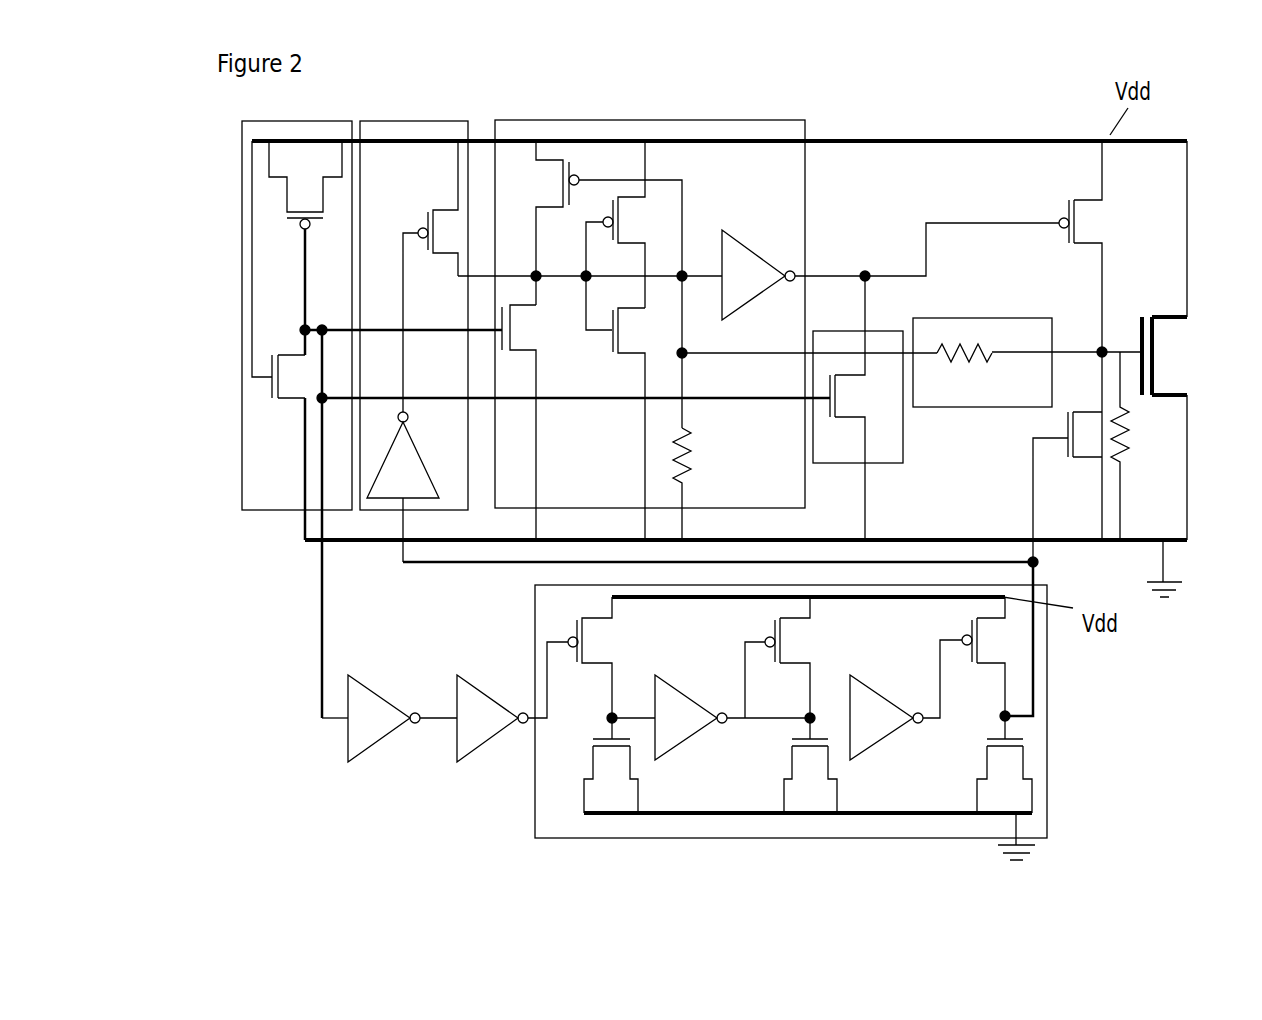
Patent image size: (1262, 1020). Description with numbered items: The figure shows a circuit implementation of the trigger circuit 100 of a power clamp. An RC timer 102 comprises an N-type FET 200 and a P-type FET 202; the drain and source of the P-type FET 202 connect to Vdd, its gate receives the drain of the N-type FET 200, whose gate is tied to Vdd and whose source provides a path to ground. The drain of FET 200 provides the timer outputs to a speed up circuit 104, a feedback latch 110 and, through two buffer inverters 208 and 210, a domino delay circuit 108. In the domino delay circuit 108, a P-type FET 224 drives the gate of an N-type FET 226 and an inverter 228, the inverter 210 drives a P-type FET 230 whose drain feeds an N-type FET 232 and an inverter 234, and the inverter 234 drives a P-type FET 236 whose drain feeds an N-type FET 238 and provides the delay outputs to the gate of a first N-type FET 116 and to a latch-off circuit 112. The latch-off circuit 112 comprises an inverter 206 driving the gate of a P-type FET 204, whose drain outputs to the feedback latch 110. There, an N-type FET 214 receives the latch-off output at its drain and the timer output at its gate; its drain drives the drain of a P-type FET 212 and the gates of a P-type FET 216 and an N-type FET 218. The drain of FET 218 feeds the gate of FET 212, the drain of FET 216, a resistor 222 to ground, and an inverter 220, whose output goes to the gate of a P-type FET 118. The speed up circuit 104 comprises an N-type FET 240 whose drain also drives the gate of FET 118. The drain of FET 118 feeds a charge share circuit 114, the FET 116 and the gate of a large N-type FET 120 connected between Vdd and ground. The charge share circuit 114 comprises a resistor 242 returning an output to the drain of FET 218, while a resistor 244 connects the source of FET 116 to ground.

The trigger circuit 100 is at (257, 671).
The RC timer 102 is at (240, 283).
The speed up circuit 104 is at (903, 440).
The domino delay circuit 108 is at (535, 622).
The feedback latch 110 is at (708, 118).
The latch-off circuit 112 is at (445, 120).
The charge share circuit 114 is at (993, 317).
The first N-type field effect transistor 116 is at (1080, 462).
The P-type field effect transistor 118 is at (1100, 195).
The large N-type field effect transistor 120 is at (1155, 320).
The N-type field effect transistor 200 is at (290, 403).
The P-type field effect transistor 202 is at (283, 183).
The P-type FET 204 is at (428, 215).
The inverter 206 is at (425, 457).
The buffer inverter 208 is at (363, 680).
The buffer inverter 210 is at (473, 677).
The P-type FET 212 is at (565, 184).
The N-type FET 214 is at (524, 353).
The P-type FET 216 is at (622, 207).
The N-type FET 218 is at (618, 322).
The inverter 220 is at (732, 228).
The resistor 222 is at (690, 452).
The P-type FET 224 is at (572, 637).
The N-type FET 226 is at (592, 775).
The inverter 228 is at (670, 673).
The P-type FET 230 is at (767, 637).
The N-type FET 232 is at (792, 772).
The inverter 234 is at (860, 675).
The P-type FET 236 is at (977, 620).
The N-type FET 238 is at (985, 770).
The N-type FET 240 is at (838, 376).
The resistor 242 is at (977, 363).
The resistor 244 is at (1130, 447).